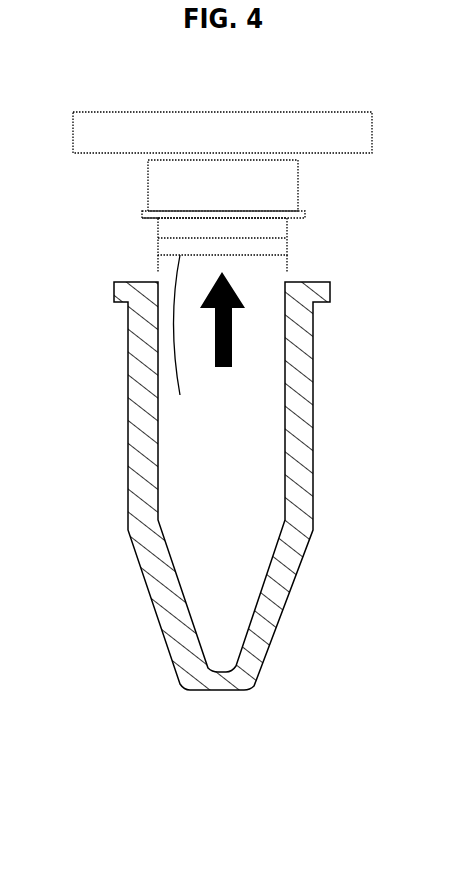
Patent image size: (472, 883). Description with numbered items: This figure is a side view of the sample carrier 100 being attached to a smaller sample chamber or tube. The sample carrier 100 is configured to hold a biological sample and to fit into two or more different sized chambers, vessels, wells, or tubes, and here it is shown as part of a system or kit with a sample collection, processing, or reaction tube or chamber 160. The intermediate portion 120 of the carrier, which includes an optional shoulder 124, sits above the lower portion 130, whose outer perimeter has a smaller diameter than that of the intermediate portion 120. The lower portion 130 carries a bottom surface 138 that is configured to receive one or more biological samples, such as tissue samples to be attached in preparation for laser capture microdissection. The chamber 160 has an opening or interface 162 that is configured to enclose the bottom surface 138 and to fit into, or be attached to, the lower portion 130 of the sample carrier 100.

The sample carrier 100 is at (152, 107).
The intermediate portion 120 is at (305, 190).
The shoulder 124 is at (152, 218).
The lower portion 130 is at (296, 236).
The bottom surface 138 is at (193, 340).
The sample collection, processing, or reaction tube 160 is at (280, 640).
The opening or interface 162 is at (153, 272).